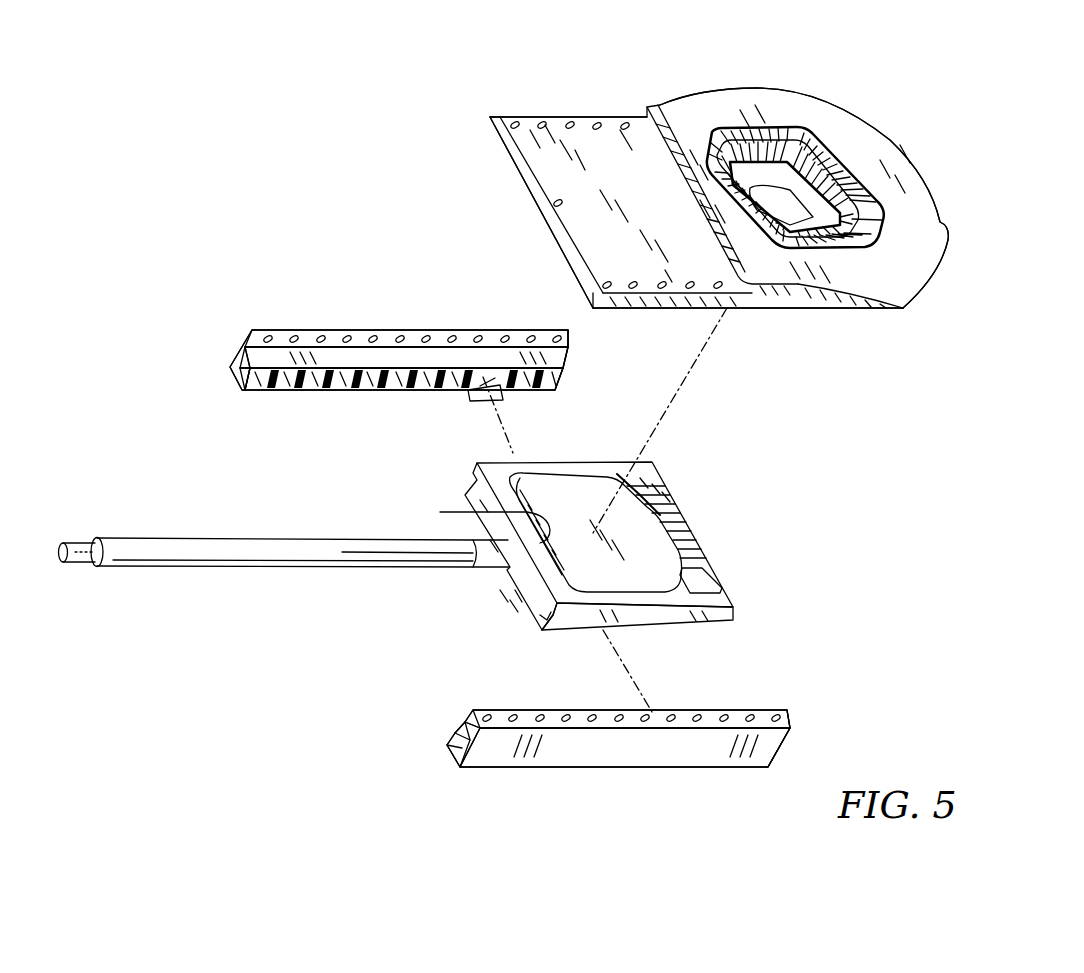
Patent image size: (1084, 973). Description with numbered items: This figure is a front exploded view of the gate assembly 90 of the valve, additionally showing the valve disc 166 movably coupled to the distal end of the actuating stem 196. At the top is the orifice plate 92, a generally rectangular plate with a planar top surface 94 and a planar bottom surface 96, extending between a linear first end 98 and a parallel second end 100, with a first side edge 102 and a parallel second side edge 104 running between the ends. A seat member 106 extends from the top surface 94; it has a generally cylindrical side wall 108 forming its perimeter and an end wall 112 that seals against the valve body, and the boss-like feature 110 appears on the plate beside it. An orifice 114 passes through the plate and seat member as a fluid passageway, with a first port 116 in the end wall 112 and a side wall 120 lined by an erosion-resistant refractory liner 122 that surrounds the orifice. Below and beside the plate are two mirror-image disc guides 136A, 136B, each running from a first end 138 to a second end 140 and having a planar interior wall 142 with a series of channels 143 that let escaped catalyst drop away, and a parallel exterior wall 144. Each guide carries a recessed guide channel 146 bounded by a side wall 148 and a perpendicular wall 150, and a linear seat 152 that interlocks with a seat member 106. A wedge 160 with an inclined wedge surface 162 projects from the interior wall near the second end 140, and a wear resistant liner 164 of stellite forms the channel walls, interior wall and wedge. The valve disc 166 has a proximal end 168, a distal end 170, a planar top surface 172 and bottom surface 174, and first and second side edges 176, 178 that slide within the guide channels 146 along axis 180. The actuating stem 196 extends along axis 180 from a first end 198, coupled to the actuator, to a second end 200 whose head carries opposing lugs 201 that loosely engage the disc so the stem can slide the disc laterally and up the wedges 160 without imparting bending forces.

The gate assembly 90 is at (226, 258).
The orifice plate 92 is at (484, 112).
The top surface 94 is at (582, 118).
The bottom surface 96 is at (793, 307).
The first end 98 is at (498, 150).
The second end 100 is at (950, 238).
The first side edge 102 is at (687, 303).
The second side edge 104 is at (528, 116).
The seat member 106 is at (495, 116).
The cylindrical side wall 108 is at (864, 108).
The raised boss side wall 110 is at (843, 303).
The end wall 112 is at (907, 200).
The orifice 114 is at (815, 172).
The first port 116 is at (868, 170).
The side wall 120 is at (762, 150).
The refractory liner 122 is at (808, 166).
The disc guide 136A is at (796, 756).
The disc guide 136B is at (226, 336).
The first end 138 is at (233, 374).
The second end 140 is at (561, 385).
The interior wall 142 is at (292, 390).
The channels 143 is at (387, 382).
The exterior wall 144 is at (370, 330).
The guide channel 146 is at (570, 352).
The side wall 148 is at (255, 365).
The wall 150 is at (330, 390).
The seat 152 is at (257, 344).
The wedge 160 is at (520, 391).
The wedge surface 162 is at (476, 388).
The wear resistant liner 164 is at (249, 388).
The valve disc 166 is at (692, 486).
The proximal end 168 is at (537, 618).
The distal end 170 is at (721, 580).
The top surface 172 is at (701, 533).
The bottom surface 174 is at (577, 628).
The first side edge 176 is at (667, 618).
The second side edge 178 is at (602, 458).
The axis 180 is at (55, 549).
The actuating stem 196 is at (139, 530).
The first end 198 is at (80, 563).
The second end 200 is at (487, 564).
The lugs 201 is at (480, 513).